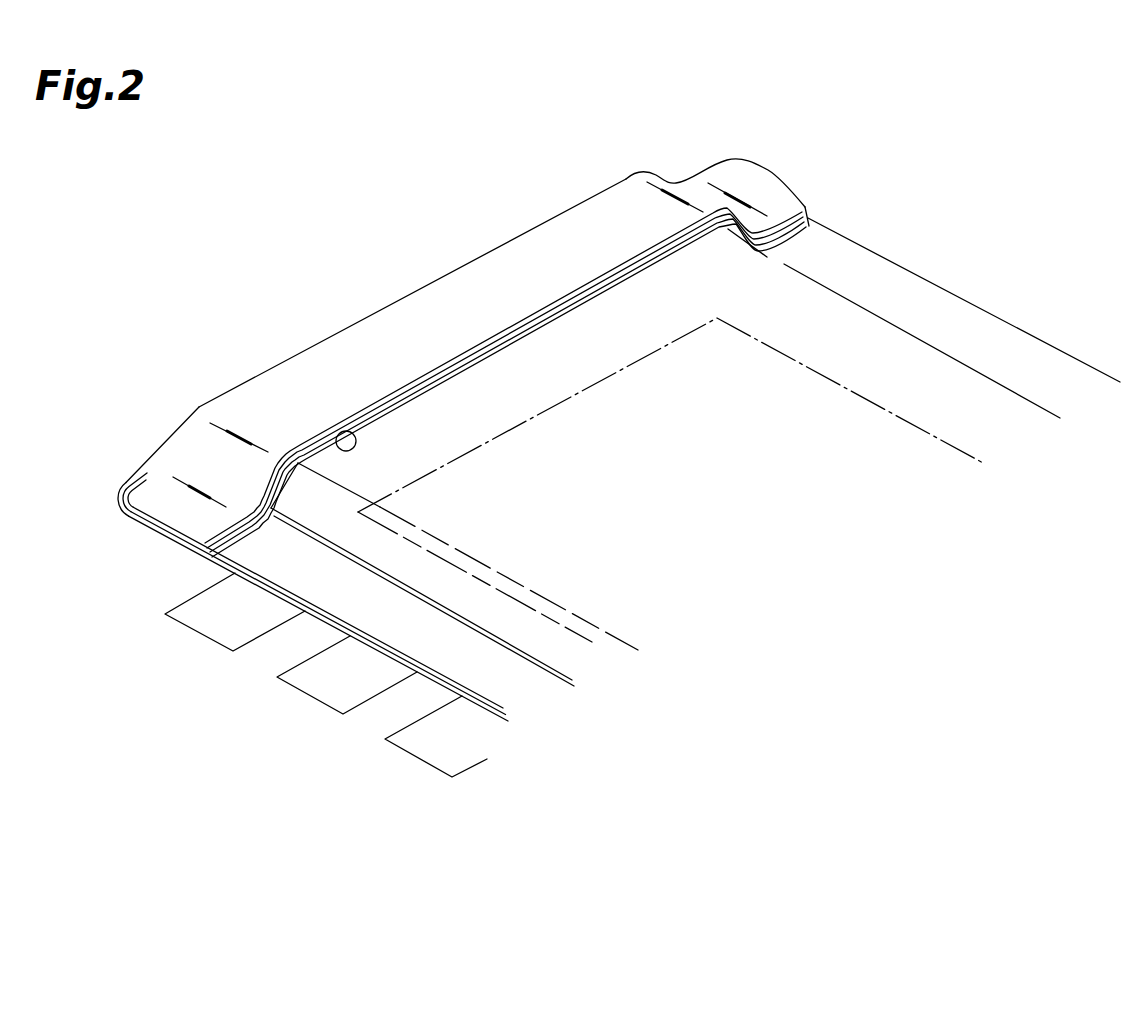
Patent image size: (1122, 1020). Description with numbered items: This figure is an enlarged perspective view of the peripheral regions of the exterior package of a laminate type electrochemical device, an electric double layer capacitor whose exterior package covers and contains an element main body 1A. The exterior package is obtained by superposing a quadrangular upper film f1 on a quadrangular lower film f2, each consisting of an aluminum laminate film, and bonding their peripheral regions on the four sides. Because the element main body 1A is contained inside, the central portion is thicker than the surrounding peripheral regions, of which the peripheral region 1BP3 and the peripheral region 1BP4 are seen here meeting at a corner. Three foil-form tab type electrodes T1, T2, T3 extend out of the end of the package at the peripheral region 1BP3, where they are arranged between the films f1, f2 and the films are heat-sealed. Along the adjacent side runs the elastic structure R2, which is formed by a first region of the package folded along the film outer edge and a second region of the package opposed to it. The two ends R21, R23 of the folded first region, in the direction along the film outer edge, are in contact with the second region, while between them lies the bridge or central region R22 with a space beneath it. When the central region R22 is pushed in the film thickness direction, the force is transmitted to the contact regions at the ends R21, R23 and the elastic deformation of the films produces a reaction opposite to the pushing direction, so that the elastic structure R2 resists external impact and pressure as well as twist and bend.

The element main body 1A is at (897, 412).
The peripheral region 1BP3 is at (258, 561).
The peripheral region 1BP4 is at (888, 282).
The elastic structure R2 is at (451, 421).
The end R21 is at (167, 465).
The central region R22 is at (365, 346).
The end R23 is at (760, 188).
The upper film f1 is at (148, 522).
The lower film f2 is at (170, 545).
The electrode T1 is at (433, 749).
The electrode T2 is at (221, 629).
The electrode T3 is at (337, 693).